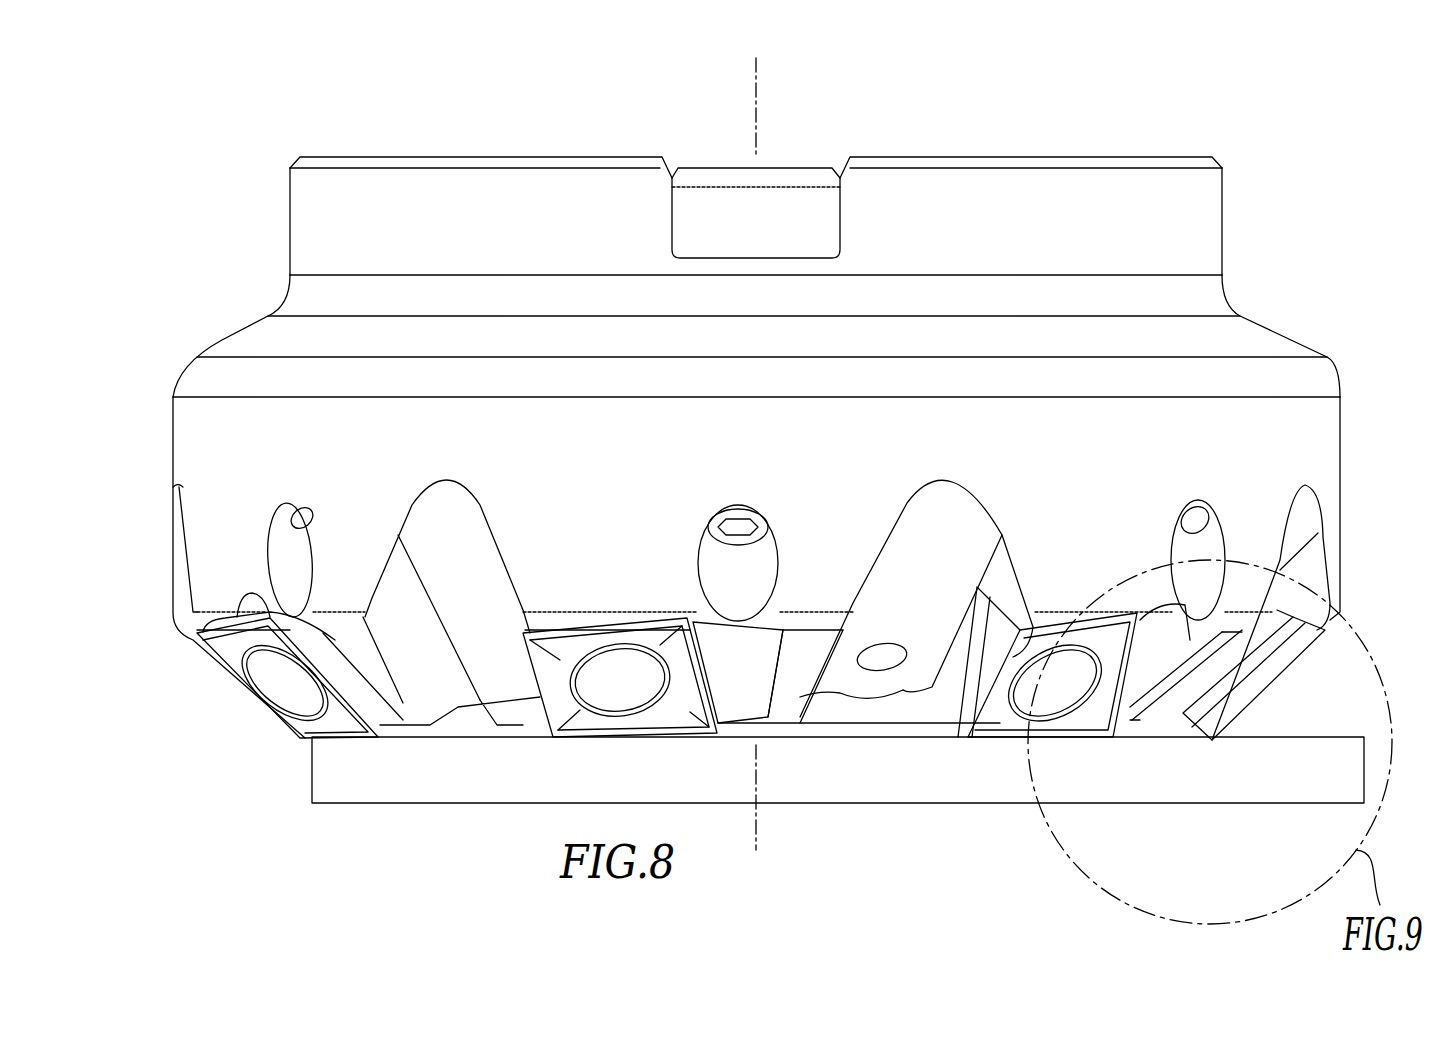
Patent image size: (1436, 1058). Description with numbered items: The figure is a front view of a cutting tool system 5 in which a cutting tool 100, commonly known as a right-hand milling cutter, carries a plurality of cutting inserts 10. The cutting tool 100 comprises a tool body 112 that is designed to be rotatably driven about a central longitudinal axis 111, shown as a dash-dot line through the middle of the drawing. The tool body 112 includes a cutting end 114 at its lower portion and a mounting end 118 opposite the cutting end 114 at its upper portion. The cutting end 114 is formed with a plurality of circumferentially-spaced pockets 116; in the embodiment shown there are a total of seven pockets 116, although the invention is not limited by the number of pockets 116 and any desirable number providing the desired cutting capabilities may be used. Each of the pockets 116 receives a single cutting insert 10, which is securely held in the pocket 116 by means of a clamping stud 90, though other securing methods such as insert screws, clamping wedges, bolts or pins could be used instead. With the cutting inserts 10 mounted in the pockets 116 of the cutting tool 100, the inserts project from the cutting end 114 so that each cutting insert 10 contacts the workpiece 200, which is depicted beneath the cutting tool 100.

The cutting tool system 5 is at (236, 123).
The cutting tool 100 is at (198, 264).
The central longitudinal axis 111 is at (757, 105).
The mounting end 118 is at (1190, 221).
The tool body 112 is at (1303, 373).
The cutting end 114 is at (1340, 460).
The pockets 116 is at (615, 610).
The clamping stud 90 is at (1063, 683).
The cutting insert 10 is at (340, 762).
The workpiece 200 is at (407, 793).